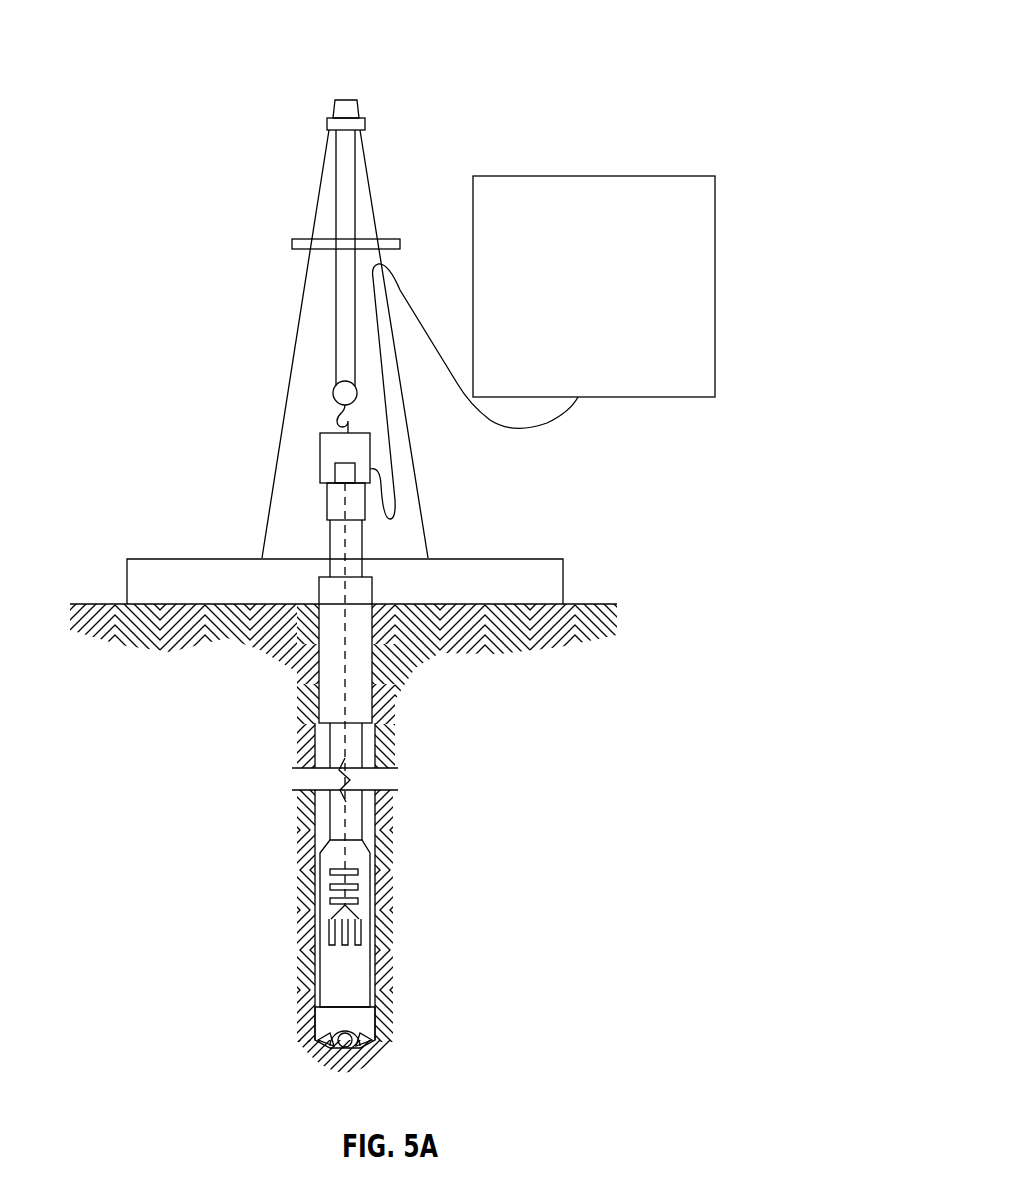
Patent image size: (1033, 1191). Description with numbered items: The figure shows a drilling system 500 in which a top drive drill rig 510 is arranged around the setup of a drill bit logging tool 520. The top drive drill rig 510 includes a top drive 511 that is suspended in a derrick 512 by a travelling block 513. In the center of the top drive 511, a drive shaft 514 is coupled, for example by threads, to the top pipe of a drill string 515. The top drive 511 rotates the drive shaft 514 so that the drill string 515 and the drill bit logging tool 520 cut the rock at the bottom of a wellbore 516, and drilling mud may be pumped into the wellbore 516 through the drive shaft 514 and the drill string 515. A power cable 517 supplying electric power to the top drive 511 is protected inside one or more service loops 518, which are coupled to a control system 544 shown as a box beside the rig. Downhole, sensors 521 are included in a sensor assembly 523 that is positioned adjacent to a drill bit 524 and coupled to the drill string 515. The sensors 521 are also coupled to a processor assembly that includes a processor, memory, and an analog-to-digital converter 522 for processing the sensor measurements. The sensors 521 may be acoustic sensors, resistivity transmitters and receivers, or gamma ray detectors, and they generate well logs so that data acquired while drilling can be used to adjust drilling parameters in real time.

The drilling system 500 is at (664, 88).
The top drive drill rig 510 is at (108, 99).
The top drive 511 is at (320, 447).
The derrick 512 is at (272, 491).
The travelling block 513 is at (334, 391).
The drive shaft 514 is at (327, 498).
The drill string 515 is at (329, 758).
The wellbore 516 is at (317, 724).
The power cable 517 is at (389, 445).
The service loop 518 is at (542, 428).
The drill bit logging tool 520 is at (192, 835).
The sensors 521 is at (320, 940).
The analog-to-digital converter 522 is at (357, 902).
The sensor assembly 523 is at (320, 872).
The drill bit 524 is at (315, 1038).
The control system 544 is at (655, 176).